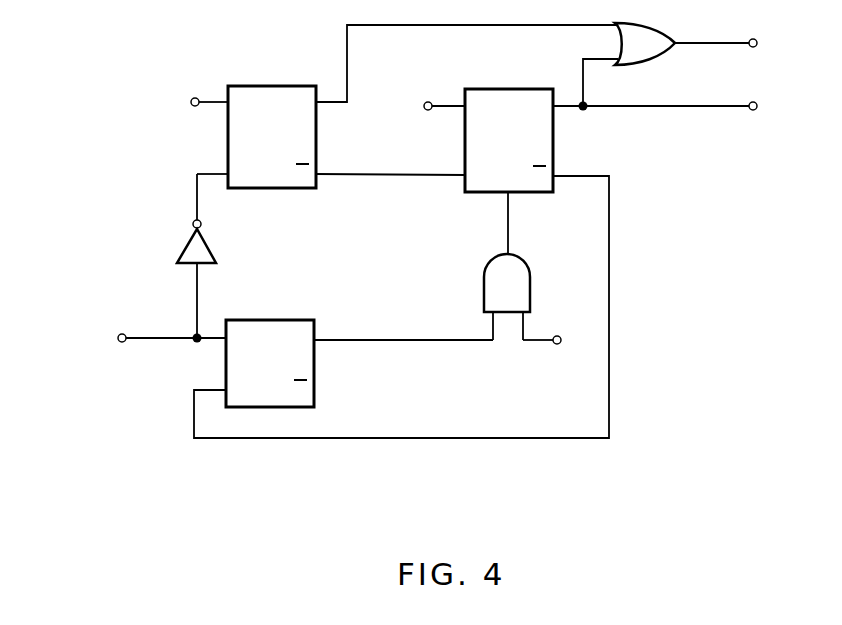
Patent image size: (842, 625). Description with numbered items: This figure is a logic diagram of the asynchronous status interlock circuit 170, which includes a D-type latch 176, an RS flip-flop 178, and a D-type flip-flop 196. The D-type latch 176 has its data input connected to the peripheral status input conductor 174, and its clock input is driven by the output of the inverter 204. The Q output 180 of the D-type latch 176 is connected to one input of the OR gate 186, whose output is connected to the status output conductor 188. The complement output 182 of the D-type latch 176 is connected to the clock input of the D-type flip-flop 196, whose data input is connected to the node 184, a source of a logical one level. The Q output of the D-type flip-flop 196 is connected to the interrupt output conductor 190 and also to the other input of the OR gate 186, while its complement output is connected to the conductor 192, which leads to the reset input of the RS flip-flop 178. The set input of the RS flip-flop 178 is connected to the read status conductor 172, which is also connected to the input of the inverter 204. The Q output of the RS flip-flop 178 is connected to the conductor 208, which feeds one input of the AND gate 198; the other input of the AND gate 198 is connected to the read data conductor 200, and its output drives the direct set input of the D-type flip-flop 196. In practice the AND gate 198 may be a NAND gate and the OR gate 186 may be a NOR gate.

The asynchronous status interlock circuit 170 is at (190, 490).
The read status conductor 172 is at (118, 338).
The peripheral status input conductor 174 is at (191, 102).
The D-type latch 176 is at (290, 86).
The RS flip-flop 178 is at (283, 320).
The Q output 180 is at (347, 47).
The complement output 182 is at (421, 173).
The node 184 is at (424, 106).
The OR gate 186 is at (652, 23).
The status output conductor 188 is at (757, 43).
The interrupt output conductor 190 is at (757, 106).
The conductor 192 is at (590, 176).
The D-type flip-flop 196 is at (523, 89).
The AND gate 198 is at (524, 262).
The read data conductor 200 is at (559, 341).
The inverter 204 is at (186, 247).
The conductor 208 is at (365, 340).